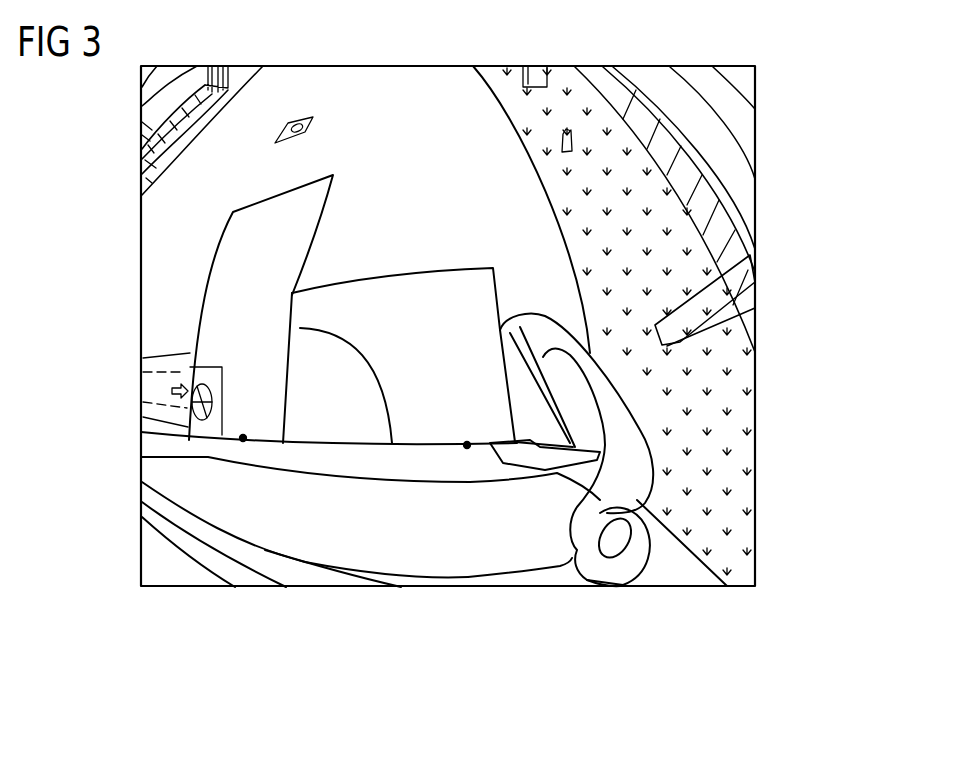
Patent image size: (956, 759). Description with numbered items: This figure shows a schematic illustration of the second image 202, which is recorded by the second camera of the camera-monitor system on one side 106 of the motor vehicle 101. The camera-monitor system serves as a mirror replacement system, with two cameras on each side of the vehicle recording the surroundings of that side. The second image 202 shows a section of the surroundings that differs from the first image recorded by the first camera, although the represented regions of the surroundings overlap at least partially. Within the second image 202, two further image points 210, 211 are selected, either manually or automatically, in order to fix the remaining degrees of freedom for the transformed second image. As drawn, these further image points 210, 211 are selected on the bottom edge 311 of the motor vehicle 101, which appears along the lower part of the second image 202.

The motor vehicle 101 is at (520, 538).
The side 106 is at (141, 386).
The second image 202 is at (780, 160).
The further image point 210 is at (243, 438).
The further image point 211 is at (467, 445).
The bottom edge 311 is at (300, 328).